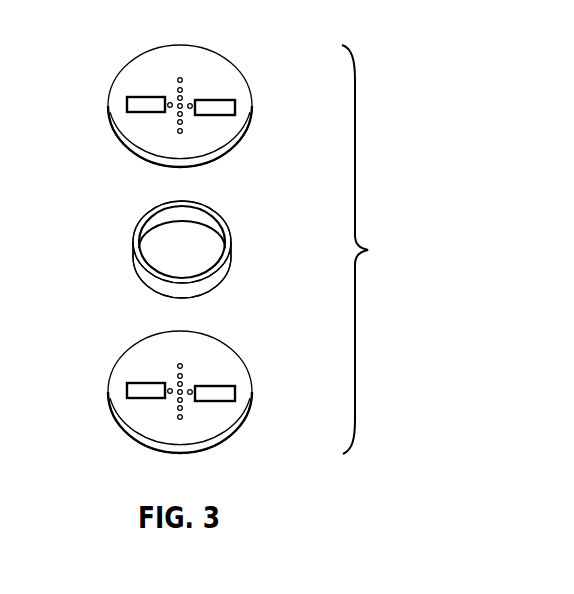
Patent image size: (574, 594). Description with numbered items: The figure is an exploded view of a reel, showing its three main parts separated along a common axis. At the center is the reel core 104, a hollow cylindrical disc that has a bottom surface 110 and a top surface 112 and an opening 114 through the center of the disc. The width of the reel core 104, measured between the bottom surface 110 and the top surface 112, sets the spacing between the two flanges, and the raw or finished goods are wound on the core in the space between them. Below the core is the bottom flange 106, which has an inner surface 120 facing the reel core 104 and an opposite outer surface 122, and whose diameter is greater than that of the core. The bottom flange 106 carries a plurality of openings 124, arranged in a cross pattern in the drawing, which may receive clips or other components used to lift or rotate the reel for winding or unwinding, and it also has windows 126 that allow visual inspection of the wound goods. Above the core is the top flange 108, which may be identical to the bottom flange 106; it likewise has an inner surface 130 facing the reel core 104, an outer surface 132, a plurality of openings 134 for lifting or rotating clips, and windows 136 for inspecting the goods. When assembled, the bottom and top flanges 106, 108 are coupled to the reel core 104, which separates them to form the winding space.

The reel core 104 is at (231, 245).
The bottom flange 106 is at (220, 368).
The top flange 108 is at (221, 83).
The bottom surface 110 is at (134, 241).
The top surface 112 is at (139, 278).
The opening 114 is at (204, 236).
The inner surface 120 is at (227, 423).
The outer surface 122 is at (228, 432).
The openings 124 is at (186, 354).
The windows 126 is at (118, 394).
The inner surface 130 is at (230, 146).
The outer surface 132 is at (227, 137).
The openings 134 is at (186, 68).
The windows 136 is at (118, 108).